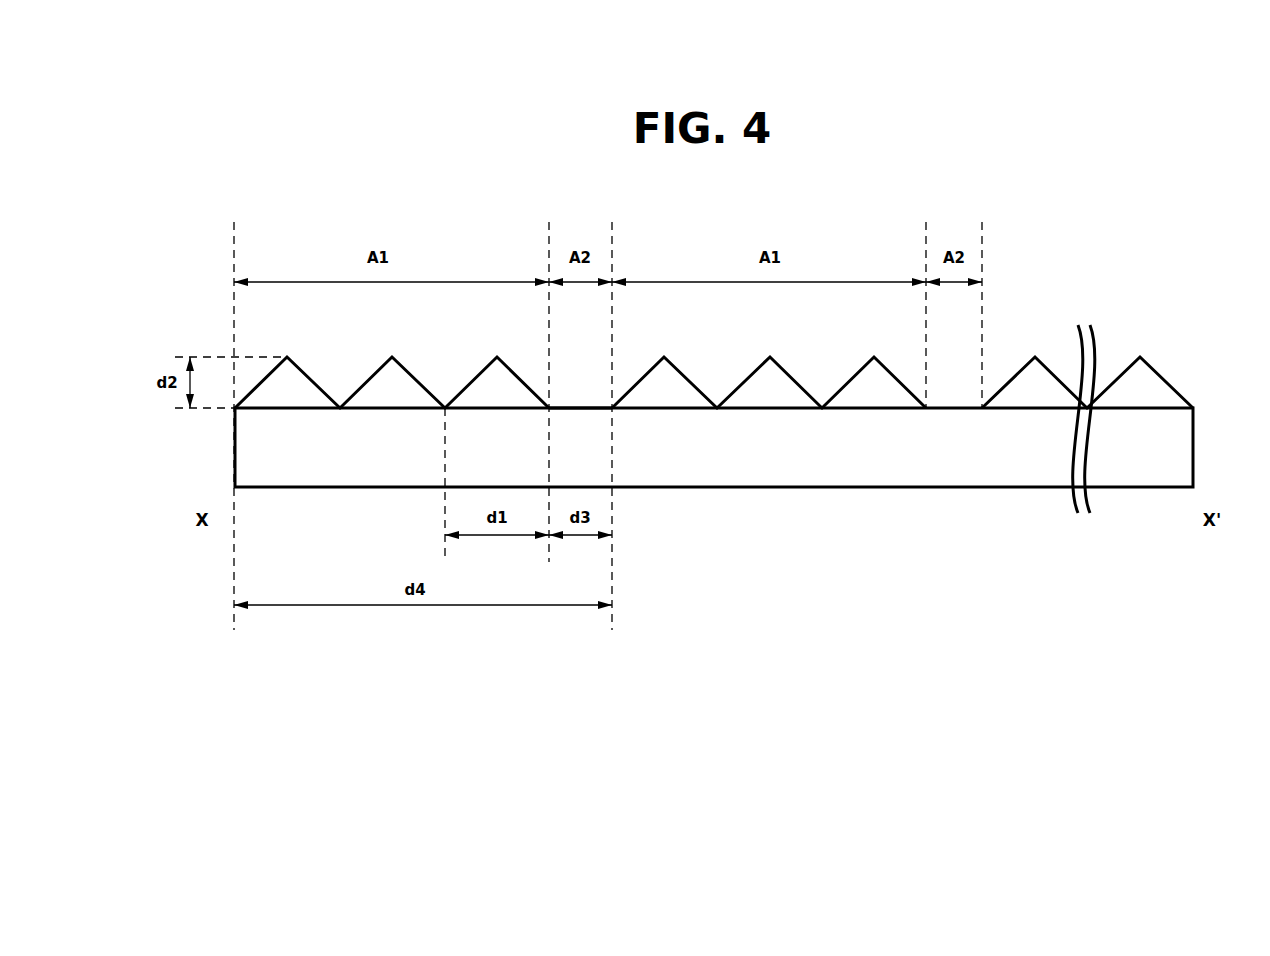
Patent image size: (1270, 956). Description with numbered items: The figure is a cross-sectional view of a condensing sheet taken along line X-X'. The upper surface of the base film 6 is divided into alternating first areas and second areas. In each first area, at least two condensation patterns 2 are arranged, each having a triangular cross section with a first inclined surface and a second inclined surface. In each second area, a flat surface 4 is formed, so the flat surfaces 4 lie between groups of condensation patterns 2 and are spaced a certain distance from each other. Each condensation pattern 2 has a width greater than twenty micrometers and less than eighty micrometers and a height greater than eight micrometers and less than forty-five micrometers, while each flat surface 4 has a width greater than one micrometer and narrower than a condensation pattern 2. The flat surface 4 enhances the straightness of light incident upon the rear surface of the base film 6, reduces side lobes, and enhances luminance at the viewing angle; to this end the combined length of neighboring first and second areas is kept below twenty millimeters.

The condensation pattern 2 is at (752, 388).
The flat surface 4 is at (580, 408).
The base film 6 is at (1180, 458).